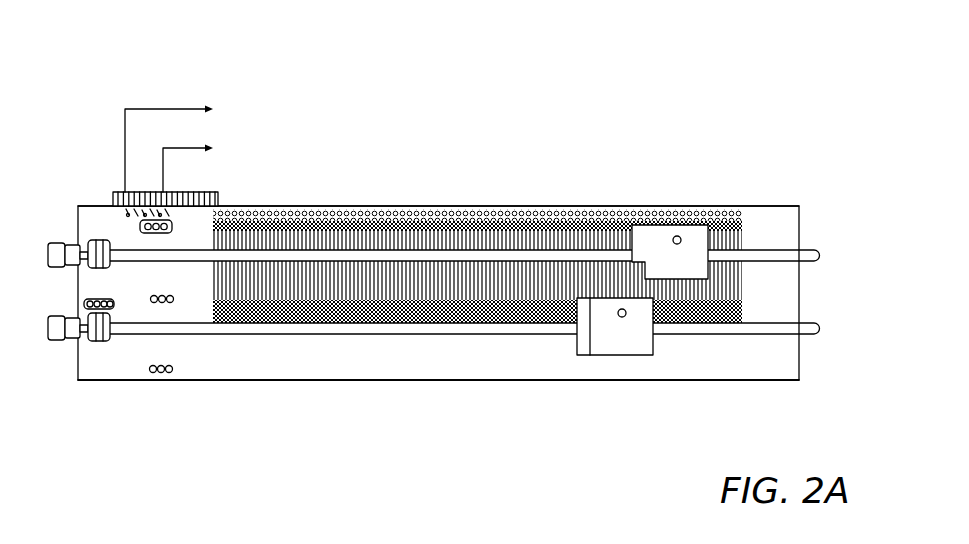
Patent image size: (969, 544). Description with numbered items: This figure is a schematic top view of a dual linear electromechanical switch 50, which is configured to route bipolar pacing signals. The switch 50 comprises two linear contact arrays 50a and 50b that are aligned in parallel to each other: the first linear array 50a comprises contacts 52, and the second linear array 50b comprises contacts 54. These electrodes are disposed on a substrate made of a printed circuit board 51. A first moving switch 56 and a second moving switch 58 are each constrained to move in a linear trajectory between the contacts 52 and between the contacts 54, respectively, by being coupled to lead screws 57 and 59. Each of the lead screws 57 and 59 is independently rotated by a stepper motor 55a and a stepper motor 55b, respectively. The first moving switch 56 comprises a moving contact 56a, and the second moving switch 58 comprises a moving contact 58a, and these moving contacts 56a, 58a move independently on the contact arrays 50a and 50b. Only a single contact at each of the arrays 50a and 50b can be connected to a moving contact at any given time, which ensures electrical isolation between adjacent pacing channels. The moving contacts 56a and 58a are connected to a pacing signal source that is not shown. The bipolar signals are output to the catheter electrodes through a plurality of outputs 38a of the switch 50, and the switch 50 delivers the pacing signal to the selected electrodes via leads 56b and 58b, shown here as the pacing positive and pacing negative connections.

The dual linear electromechanical switch 50 is at (776, 99).
The first linear contact array 50a is at (536, 178).
The second linear contact array 50b is at (346, 419).
The printed circuit board 51 is at (297, 369).
The contacts 52 is at (466, 207).
The contacts 54 is at (431, 326).
The stepper motor 55a is at (52, 242).
The stepper motor 55b is at (55, 340).
The first moving switch 56 is at (663, 245).
The moving contact 56a is at (677, 236).
The lead 56b is at (166, 108).
The lead screw 57 is at (132, 262).
The second moving switch 58 is at (608, 340).
The moving contact 58a is at (626, 318).
The lead 58b is at (190, 150).
The lead screw 59 is at (192, 327).
The outputs 38a is at (118, 192).